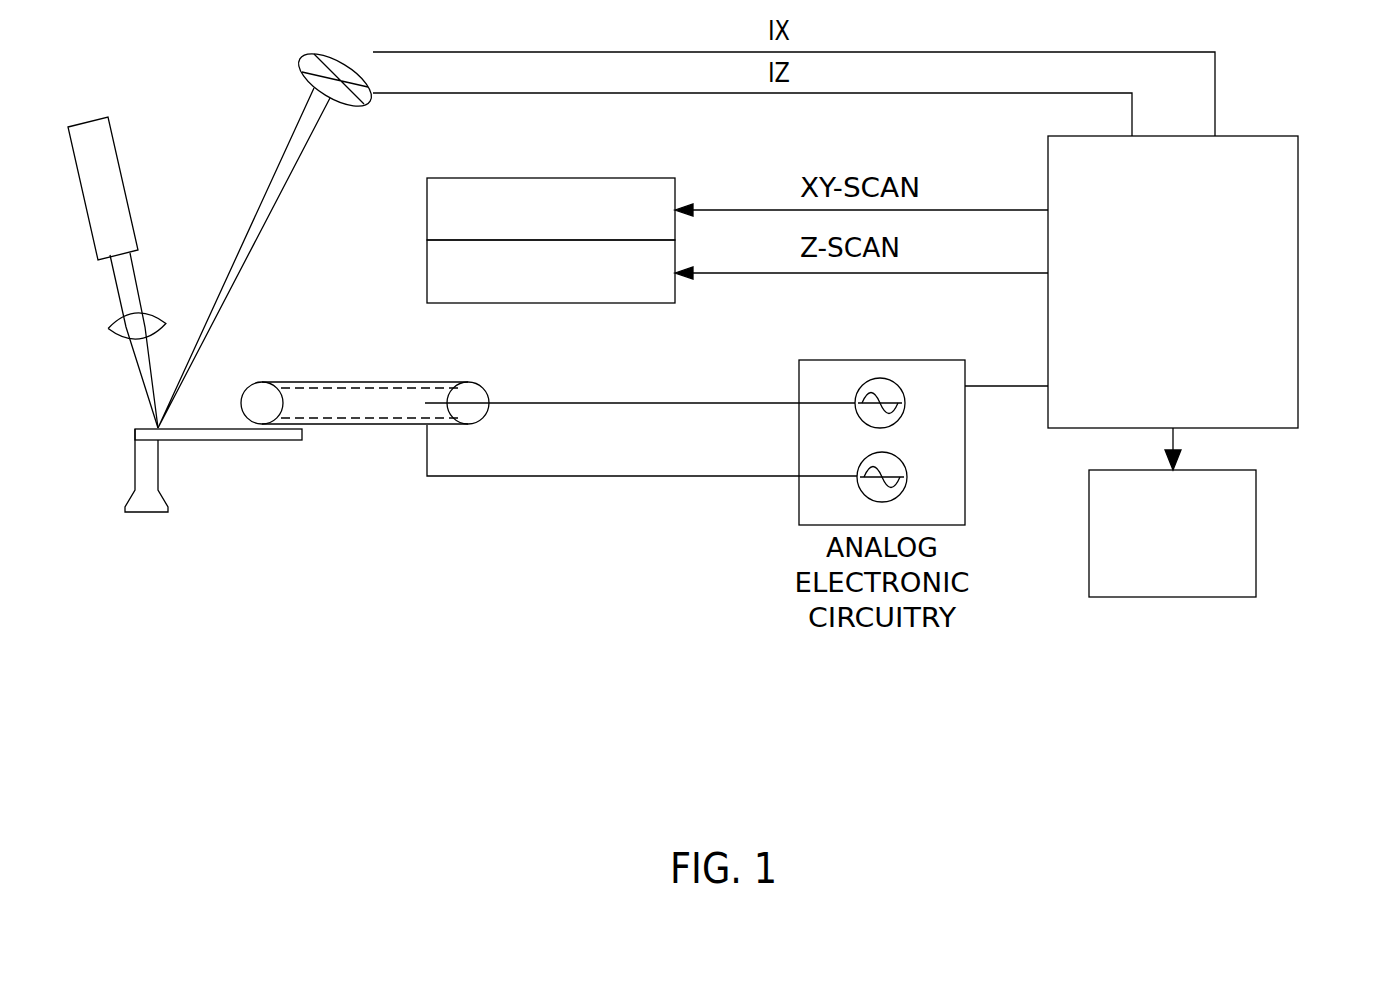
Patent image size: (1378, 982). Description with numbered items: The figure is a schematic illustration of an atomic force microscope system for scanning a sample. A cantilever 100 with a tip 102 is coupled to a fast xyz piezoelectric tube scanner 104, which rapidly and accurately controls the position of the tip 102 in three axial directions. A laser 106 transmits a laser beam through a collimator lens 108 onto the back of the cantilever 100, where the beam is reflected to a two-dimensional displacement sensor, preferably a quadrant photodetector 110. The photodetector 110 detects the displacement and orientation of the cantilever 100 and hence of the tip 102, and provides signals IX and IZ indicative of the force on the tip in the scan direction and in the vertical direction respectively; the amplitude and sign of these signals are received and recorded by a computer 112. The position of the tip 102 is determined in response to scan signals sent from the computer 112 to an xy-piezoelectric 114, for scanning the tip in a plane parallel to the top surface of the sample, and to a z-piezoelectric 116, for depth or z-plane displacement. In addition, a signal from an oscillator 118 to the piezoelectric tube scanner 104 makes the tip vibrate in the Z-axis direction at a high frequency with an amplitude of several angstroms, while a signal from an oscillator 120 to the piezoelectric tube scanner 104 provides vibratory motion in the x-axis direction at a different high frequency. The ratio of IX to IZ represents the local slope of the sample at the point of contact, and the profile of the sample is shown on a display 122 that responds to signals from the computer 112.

The cantilever 100 is at (247, 440).
The tip 102 is at (160, 498).
The fast xyz piezoelectric tube scanner 104 is at (283, 381).
The laser 106 is at (112, 152).
The collimator lens 108 is at (112, 333).
The photodetector 110 is at (340, 52).
The computer 112 is at (1275, 136).
The xy-piezoelectric 114 is at (582, 178).
The z-piezoelectric 116 is at (588, 303).
The oscillator 118 is at (893, 497).
The oscillator 120 is at (899, 420).
The display 122 is at (1257, 492).